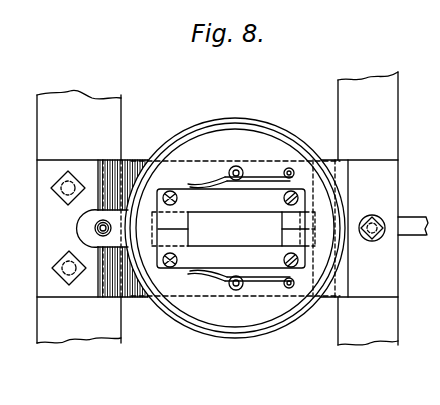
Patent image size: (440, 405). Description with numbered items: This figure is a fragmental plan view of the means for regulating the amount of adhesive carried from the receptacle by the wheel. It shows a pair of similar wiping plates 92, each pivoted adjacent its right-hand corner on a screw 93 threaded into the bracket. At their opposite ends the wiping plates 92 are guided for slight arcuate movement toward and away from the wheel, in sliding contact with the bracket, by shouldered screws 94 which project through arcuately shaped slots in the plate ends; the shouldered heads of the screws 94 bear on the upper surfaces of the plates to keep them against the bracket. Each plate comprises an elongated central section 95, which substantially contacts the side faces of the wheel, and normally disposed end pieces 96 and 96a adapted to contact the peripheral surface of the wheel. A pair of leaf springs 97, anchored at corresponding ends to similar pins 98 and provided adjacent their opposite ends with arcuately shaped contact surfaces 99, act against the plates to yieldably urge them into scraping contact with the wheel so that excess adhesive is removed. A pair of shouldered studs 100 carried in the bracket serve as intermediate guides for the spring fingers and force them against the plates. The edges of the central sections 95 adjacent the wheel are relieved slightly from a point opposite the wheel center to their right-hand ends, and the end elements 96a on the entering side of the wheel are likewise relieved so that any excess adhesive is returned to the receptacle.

The wiping plates 92 is at (181, 189).
The screws 93 is at (293, 192).
The shouldered screws 94 is at (166, 191).
The elongated central sections 95 is at (200, 228).
The end pieces 96 is at (186, 227).
The end pieces 96a is at (289, 237).
The leaf springs 97 is at (253, 177).
The pins 98 is at (289, 168).
The arcuately shaped contact surfaces 99 is at (212, 179).
The shouldered studs 100 is at (236, 166).